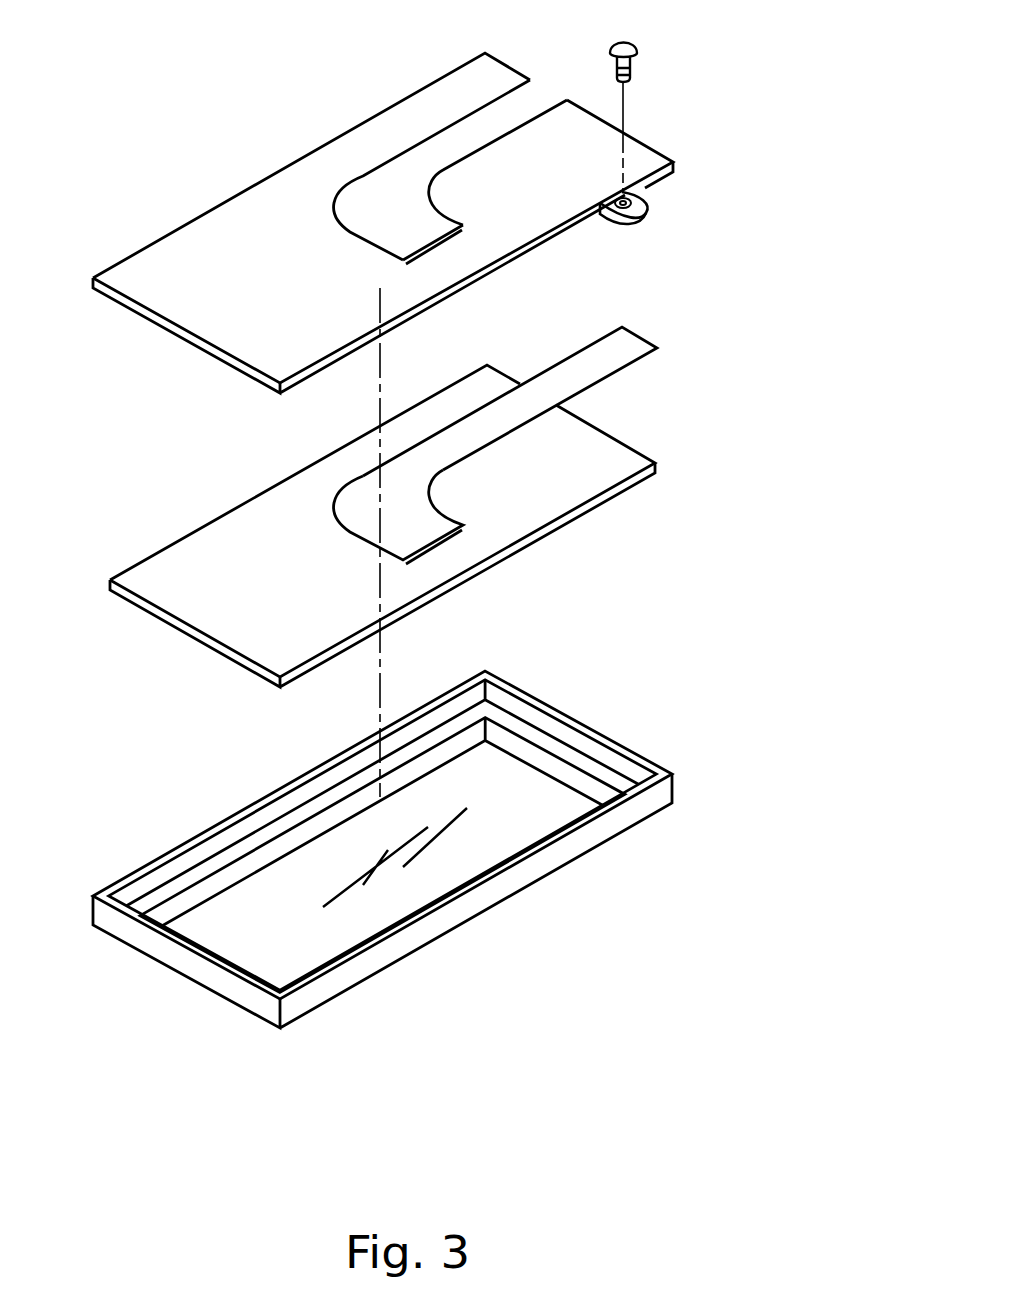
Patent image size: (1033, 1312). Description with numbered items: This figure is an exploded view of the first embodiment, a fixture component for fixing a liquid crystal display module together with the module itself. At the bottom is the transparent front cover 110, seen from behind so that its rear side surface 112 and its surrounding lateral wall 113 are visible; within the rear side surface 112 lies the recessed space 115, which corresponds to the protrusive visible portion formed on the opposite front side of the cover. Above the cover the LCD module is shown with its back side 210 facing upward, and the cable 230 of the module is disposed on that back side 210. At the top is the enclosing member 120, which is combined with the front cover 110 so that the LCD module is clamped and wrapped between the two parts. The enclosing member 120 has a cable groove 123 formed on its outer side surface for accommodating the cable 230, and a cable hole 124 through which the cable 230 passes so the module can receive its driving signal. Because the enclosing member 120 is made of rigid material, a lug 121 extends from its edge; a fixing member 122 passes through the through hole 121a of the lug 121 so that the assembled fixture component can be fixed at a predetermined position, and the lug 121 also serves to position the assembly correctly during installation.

The front cover 110 is at (618, 722).
The rear side surface 112 is at (217, 863).
The lateral wall 113 is at (567, 722).
The recessed space 115 is at (507, 801).
The enclosing member 120 is at (643, 108).
The lug 121 is at (637, 220).
The through hole 121a is at (626, 194).
The fixing member 122 is at (616, 43).
The cable groove 123 is at (407, 157).
The cable hole 124 is at (433, 241).
The back side 210 is at (580, 475).
The cable 230 is at (618, 350).